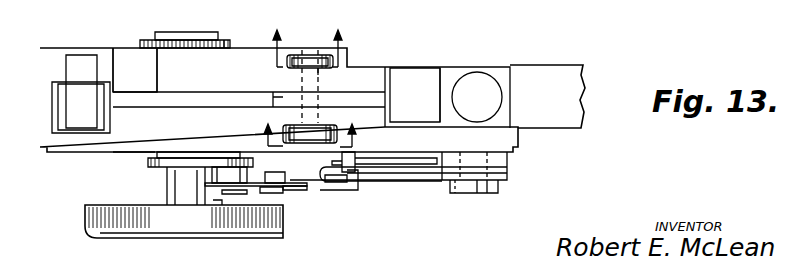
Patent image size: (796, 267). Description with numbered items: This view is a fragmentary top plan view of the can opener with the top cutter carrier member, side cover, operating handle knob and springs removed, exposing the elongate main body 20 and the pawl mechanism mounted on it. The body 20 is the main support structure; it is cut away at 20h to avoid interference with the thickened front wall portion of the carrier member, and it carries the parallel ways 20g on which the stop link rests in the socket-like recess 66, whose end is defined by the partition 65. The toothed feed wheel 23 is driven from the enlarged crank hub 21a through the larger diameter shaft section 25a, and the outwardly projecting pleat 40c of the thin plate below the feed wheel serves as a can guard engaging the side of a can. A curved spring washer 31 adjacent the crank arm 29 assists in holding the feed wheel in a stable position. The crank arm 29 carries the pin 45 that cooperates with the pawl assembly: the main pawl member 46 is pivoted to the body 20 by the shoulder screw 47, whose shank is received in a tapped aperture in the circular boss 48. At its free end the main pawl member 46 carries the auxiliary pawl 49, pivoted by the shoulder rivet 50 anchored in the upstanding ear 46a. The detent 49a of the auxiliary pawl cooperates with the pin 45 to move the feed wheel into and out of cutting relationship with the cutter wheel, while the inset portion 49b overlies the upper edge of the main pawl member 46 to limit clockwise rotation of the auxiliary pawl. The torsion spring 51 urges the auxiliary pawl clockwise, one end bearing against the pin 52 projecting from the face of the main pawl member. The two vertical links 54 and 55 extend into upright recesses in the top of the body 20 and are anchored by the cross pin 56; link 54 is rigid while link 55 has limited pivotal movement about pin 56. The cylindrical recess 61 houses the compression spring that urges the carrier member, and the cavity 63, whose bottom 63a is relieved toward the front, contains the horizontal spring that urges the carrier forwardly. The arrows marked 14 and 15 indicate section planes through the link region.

The elongate body 20 is at (557, 63).
The cut-away portion of main body 20h is at (133, 52).
The parallel ways 20g is at (67, 100).
The pleat or fold 40c is at (178, 33).
The feed wheel 23 is at (224, 40).
The section line 14- 14 is at (311, 64).
The section line 15- 15 is at (314, 132).
The vertical link 54 is at (296, 54).
The vertical link 55 is at (333, 127).
The cross pin 56 is at (322, 73).
The bottom of cavity 63a is at (402, 72).
The cavity 63 is at (441, 78).
The cylindrical recess 61 is at (482, 80).
The partition 65 is at (82, 135).
The socket-like recess 66 is at (104, 117).
The curved spring washer 31 is at (133, 153).
The crank arm 29 is at (212, 152).
The larger diameter section of feed wheel shaft 25a is at (175, 192).
The crank arm pin 45 is at (275, 178).
The auxiliary pawl 49 is at (283, 182).
The shoulder rivet 50 is at (278, 192).
The inset portion 49b is at (300, 186).
The upstanding ear 46a is at (312, 190).
The detent 49a is at (213, 200).
The crank hub portion 21a is at (255, 234).
The torsion spring 51 is at (422, 159).
The main pawl member 46 is at (424, 181).
The pin 52 is at (362, 190).
The circular boss 48 is at (508, 163).
The shoulder screw 47 is at (477, 190).